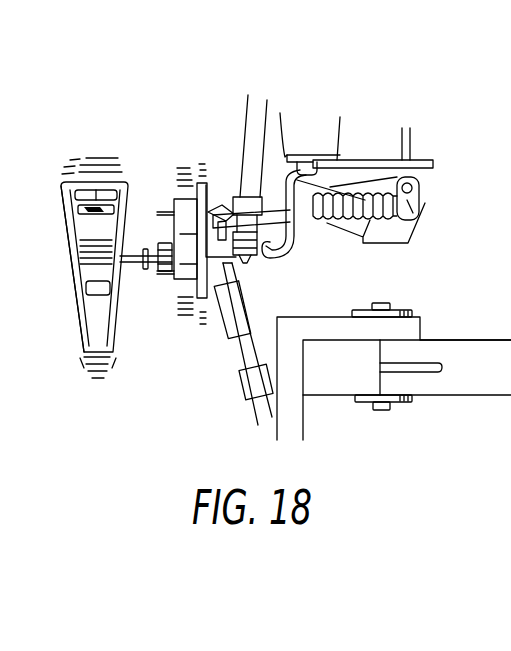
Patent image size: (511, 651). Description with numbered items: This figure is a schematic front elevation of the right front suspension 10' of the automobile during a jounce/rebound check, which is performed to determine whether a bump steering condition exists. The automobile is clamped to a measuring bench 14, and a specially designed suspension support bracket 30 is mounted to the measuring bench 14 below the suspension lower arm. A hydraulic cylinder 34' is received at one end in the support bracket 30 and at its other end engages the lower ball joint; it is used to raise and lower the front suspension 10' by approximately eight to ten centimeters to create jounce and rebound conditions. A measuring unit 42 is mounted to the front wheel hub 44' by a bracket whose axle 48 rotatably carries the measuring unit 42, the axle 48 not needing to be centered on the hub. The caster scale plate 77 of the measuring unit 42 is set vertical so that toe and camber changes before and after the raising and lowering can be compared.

The front suspension 10' is at (319, 198).
The measuring bench 14 is at (465, 340).
The suspension support bracket 30 is at (340, 315).
The hydraulic cylinder 34' is at (229, 344).
The measuring unit 42 is at (130, 348).
The front wheel hub 44' is at (174, 223).
The axle 48 is at (122, 252).
The caster scale plate 77 is at (75, 228).